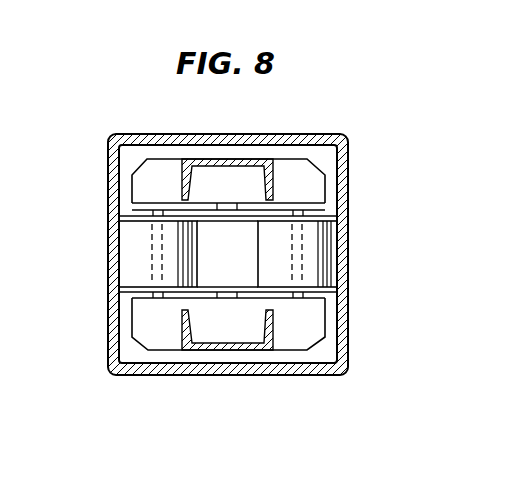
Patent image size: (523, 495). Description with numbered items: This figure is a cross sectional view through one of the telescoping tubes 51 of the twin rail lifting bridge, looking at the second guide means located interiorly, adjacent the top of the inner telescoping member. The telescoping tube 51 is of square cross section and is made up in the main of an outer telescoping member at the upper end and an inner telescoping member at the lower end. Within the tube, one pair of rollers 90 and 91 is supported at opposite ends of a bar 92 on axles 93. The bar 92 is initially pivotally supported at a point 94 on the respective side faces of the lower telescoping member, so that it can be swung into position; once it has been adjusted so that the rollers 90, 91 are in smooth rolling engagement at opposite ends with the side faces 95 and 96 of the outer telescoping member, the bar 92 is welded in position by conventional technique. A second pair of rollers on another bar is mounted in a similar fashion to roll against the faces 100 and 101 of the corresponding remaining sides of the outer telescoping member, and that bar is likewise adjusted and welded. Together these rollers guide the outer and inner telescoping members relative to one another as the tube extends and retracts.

The telescoping tube 51 is at (352, 163).
The face of outer telescoping member 100 is at (162, 147).
The face of outer telescoping member 101 is at (302, 365).
The axles 93 is at (153, 217).
The bar 92 is at (318, 217).
The roller 90 is at (125, 258).
The roller 91 is at (330, 258).
The pivot point 94 is at (230, 298).
The side face of outer telescoping member 96 is at (336, 326).
The side face of outer telescoping member 95 is at (121, 325).